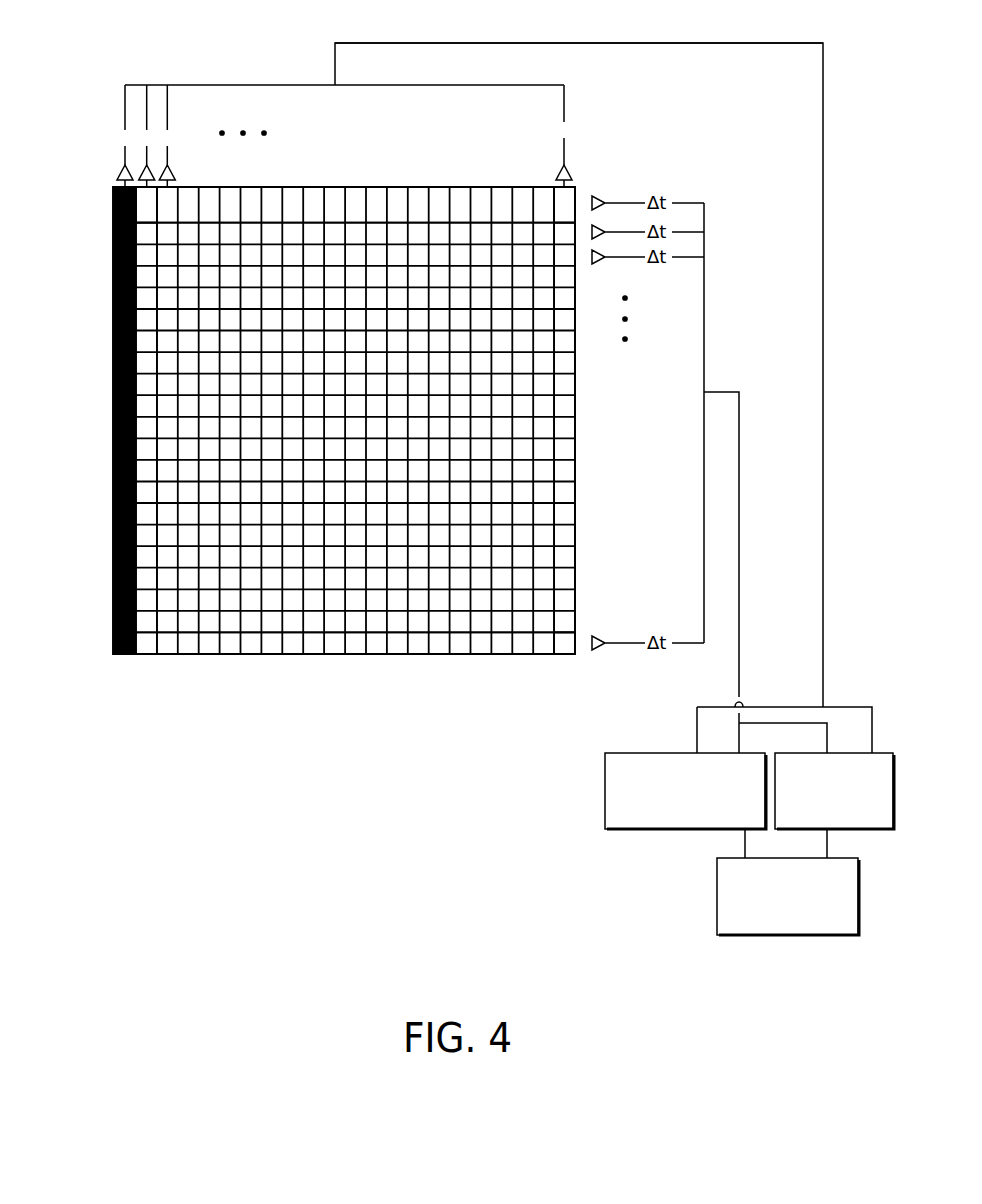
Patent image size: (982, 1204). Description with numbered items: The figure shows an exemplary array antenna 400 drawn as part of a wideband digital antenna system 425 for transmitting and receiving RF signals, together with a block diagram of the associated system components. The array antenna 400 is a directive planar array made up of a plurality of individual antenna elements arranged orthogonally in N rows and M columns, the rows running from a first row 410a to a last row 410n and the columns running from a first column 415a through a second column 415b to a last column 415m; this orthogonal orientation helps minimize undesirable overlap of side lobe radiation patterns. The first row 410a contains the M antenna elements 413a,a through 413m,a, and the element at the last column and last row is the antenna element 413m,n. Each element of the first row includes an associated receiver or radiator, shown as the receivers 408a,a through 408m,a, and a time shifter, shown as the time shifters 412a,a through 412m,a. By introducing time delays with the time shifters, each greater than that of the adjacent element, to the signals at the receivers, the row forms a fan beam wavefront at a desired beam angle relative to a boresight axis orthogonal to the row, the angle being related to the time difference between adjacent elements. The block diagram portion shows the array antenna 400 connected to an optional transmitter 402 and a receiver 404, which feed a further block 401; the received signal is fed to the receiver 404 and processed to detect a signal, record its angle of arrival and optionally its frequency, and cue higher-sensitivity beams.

The array antenna 400 is at (113, 393).
The controller 401 is at (788, 896).
The transmitter 402 is at (685, 791).
The receiver 404 is at (834, 791).
The receiver (or radiator) 408a,a is at (120, 167).
The receiver (or radiator) 408m,a is at (556, 178).
The first row 410a is at (113, 208).
The row 410n is at (113, 640).
The time shifter 412a,a is at (122, 132).
The time shifter 412m,a is at (555, 135).
The antenna element 413a,a is at (113, 187).
The antenna element 413m,a is at (565, 194).
The antenna element 413m,n is at (562, 644).
The column 415a is at (126, 656).
The column 415b is at (148, 656).
The column 415m is at (568, 657).
The wideband digital antenna system 425 is at (433, 919).